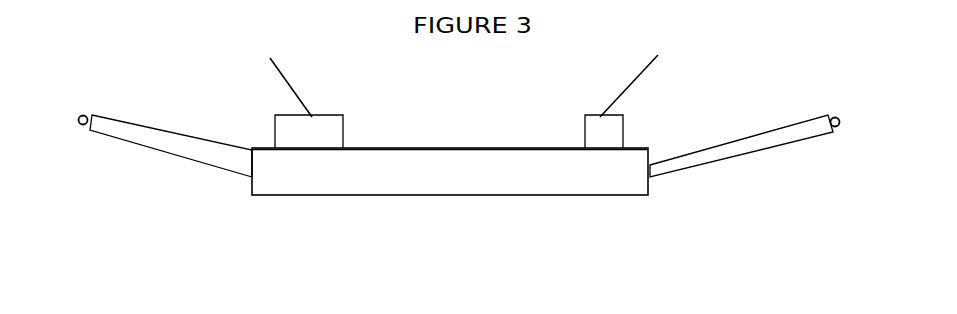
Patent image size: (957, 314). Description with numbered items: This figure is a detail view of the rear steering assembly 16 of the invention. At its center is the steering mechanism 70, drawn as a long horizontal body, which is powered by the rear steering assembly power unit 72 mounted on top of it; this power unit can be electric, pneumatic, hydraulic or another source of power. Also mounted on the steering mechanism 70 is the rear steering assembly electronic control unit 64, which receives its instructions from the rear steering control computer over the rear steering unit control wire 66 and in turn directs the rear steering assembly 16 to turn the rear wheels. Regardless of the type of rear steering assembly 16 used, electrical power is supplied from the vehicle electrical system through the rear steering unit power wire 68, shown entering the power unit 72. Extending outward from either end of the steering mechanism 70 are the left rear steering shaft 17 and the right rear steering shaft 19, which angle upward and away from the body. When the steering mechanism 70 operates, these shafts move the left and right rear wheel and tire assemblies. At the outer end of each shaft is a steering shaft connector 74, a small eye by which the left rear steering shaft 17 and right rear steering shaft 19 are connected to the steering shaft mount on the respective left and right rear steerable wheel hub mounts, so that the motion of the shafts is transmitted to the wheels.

The rear steering assembly 16 is at (450, 184).
The left rear steering shaft 17 is at (163, 145).
The right rear steering shaft 19 is at (737, 152).
The rear steering assembly electronic control unit 64 is at (602, 135).
The rear steering unit control wire 66 is at (637, 88).
The rear steering unit power wire 68 is at (290, 85).
The steering mechanism 70 is at (448, 173).
The rear steering assembly power unit 72 is at (323, 132).
The steering shaft connector 74 is at (82, 115).